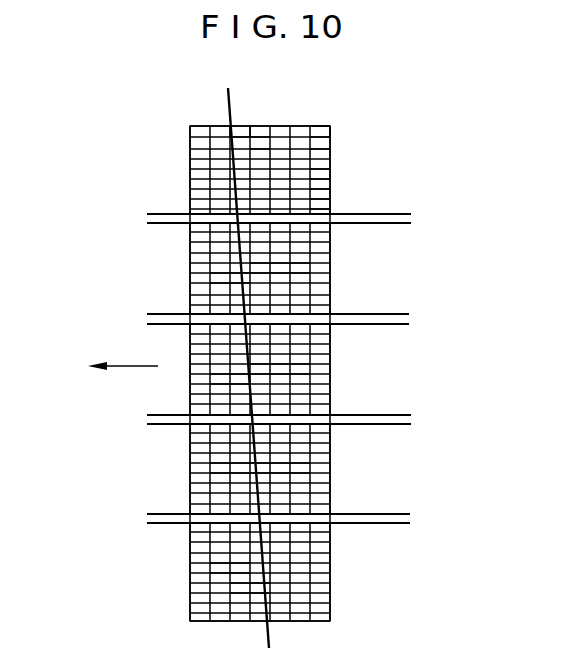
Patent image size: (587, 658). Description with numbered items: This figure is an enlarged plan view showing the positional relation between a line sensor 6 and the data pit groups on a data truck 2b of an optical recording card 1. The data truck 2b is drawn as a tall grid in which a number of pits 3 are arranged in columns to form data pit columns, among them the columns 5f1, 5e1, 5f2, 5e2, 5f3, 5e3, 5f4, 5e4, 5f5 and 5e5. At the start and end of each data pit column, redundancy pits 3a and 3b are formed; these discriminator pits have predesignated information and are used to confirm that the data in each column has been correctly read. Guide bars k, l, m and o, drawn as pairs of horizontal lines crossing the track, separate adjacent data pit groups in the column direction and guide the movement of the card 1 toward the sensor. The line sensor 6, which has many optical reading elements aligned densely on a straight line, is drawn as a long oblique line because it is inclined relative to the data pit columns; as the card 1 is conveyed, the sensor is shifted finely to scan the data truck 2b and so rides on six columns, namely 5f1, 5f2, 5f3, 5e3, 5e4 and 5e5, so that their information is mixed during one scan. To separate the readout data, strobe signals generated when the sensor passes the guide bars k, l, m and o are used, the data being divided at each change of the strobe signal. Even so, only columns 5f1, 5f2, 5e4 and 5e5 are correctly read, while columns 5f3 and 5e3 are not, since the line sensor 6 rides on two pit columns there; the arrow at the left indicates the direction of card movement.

The optical recording card 1 is at (142, 197).
The data truck 2b is at (148, 245).
The pit 3 is at (322, 140).
The redundancy pit 3a is at (328, 125).
The redundancy pit 3b is at (322, 208).
The line sensor 6 is at (229, 100).
The guide bar k is at (408, 213).
The guide bar l is at (400, 312).
The guide bar m is at (400, 414).
The guide bar o is at (400, 513).
The data pit column 5f1 is at (238, 128).
The data pit column 5e1 is at (258, 140).
The data pit column 5f2 is at (233, 280).
The data pit column 5e2 is at (262, 270).
The data pit column 5f3 is at (240, 372).
The data pit column 5e3 is at (260, 370).
The data pit column 5f4 is at (242, 457).
The data pit column 5e4 is at (265, 468).
The data pit column 5f5 is at (243, 566).
The data pit column 5e5 is at (257, 587).